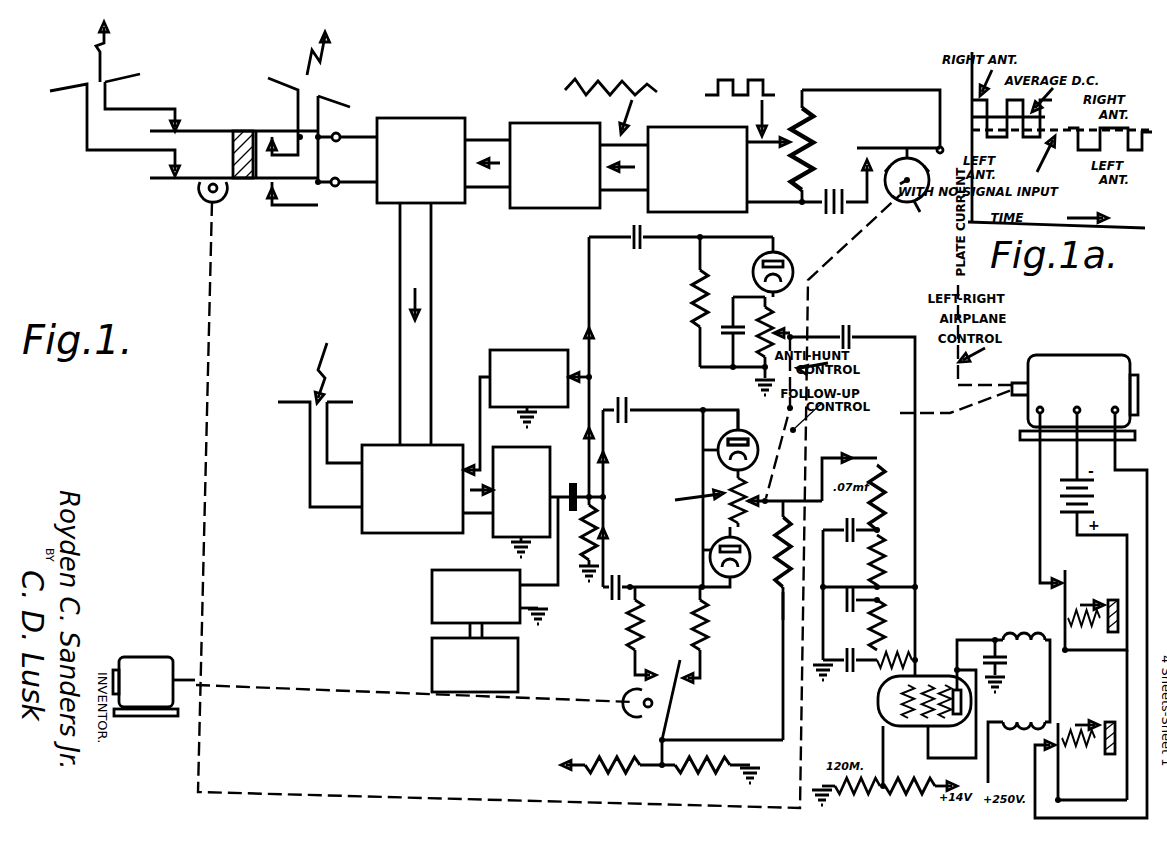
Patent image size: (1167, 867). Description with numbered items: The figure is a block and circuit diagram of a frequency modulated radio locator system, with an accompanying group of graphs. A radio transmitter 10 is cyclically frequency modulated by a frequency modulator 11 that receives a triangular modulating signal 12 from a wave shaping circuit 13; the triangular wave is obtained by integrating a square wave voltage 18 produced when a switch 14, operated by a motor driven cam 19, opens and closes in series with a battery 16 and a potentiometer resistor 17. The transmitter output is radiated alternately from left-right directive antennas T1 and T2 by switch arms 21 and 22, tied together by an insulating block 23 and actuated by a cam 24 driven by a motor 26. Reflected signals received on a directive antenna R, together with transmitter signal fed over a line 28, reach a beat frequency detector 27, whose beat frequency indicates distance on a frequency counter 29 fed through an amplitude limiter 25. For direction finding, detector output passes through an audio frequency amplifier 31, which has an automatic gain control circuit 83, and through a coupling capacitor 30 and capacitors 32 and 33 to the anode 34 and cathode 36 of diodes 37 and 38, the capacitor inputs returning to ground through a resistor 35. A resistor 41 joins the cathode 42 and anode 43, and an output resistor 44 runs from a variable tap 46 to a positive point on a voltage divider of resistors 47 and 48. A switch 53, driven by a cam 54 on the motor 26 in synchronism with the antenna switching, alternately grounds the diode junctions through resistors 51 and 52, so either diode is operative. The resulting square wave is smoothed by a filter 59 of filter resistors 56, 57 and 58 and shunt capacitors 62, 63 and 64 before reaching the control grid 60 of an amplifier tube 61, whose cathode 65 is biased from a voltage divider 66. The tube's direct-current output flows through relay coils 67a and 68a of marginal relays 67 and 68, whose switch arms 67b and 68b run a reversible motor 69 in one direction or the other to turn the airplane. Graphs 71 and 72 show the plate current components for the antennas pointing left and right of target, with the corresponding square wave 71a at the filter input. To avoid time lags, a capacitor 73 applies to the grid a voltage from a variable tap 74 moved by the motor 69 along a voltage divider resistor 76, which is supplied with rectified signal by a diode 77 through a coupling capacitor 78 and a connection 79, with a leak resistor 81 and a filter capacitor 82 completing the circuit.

In FIG. 1, the radio transmitter 10 is at (432, 118).
In FIG. 1, the frequency modulator 11 is at (530, 123).
In FIG. 1, the modulating signal 12 is at (580, 86).
In FIG. 1, the wave shaping circuit 13 is at (708, 127).
In FIG. 1, the switch 14 is at (899, 152).
In FIG. 1, the battery 16 is at (838, 188).
In FIG. 1, the potentiometer resistor 17 is at (815, 132).
In FIG. 1, the square wave voltage 18 is at (757, 64).
In FIG. 1, the motor driven cam 19 is at (918, 219).
In FIG. 1, the switch arm 21 is at (220, 130).
In FIG. 1, the switch arm 22 is at (216, 177).
In FIG. 1, the block of insulating material 23 is at (256, 162).
In FIG. 1, the cam 24 is at (224, 196).
In FIG. 1, the amplitude limiter 25 is at (432, 604).
In FIG. 1, the motor 26 is at (153, 657).
In FIG. 1, the beat frequency detector 27 is at (392, 445).
In FIG. 1, the line 28 is at (400, 257).
In FIG. 1, the frequency counter 29 is at (432, 663).
In FIG. 1, the coupling capacitor 30 is at (573, 483).
In FIG. 1, the audio frequency amplifier 31 is at (548, 441).
In FIG. 1, the capacitor 32 is at (618, 400).
In FIG. 1, the capacitor 33 is at (620, 573).
In FIG. 1, the anode 34 is at (753, 440).
In FIG. 1, the resistor 35 is at (600, 528).
In FIG. 1, the cathode 36 is at (780, 600).
In FIG. 1, the diode 37 is at (718, 452).
In FIG. 1, the diode 38 is at (710, 562).
In FIG. 1, the resistor 41 is at (744, 514).
In FIG. 1, the cathode 42 is at (723, 462).
In FIG. 1, the anode 43 is at (708, 550).
In FIG. 1, the output resistor 44 is at (778, 556).
In FIG. 1, the variable tap 46 is at (783, 488).
In FIG. 1, the resistor 47 is at (698, 772).
In FIG. 1, the resistor 48 is at (605, 772).
In FIG. 1, the resistor 51 is at (712, 642).
In FIG. 1, the resistor 52 is at (630, 642).
In FIG. 1, the switch 53 is at (683, 690).
In FIG. 1, the cam 54 is at (634, 712).
In FIG. 1, the filter resistor 56 is at (870, 464).
In FIG. 1, the filter resistor 57 is at (890, 567).
In FIG. 1, the filter resistor 58 is at (895, 613).
In FIG. 1, the filter 59 is at (860, 572).
In FIG. 1, the control grid 60 is at (895, 668).
In FIG. 1, the amplifier tube 61 is at (938, 668).
In FIG. 1, the shunt capacitor 62 is at (846, 527).
In FIG. 1, the shunt capacitor 63 is at (855, 612).
In FIG. 1, the shunt capacitor 64 is at (851, 673).
In FIG. 1, the cathode 65 is at (880, 722).
In FIG. 1, the voltage divider 66 is at (925, 783).
In FIG. 1, the marginal relay 67 is at (1050, 612).
In FIG. 1, the relay coil 67a is at (1000, 632).
In FIG. 1, the switch arm 67b is at (1068, 580).
In FIG. 1, the marginal relay 68 is at (1026, 754).
In FIG. 1, the relay coil 68a is at (1025, 735).
In FIG. 1, the switch arm 68b is at (1062, 762).
In FIG. 1, the reversible motor 69 is at (1115, 358).
In FIG. 1A, the graph 71 is at (1006, 112).
In FIG. 1A, the square wave 71a is at (1103, 130).
In FIG. 1A, the graph 72 is at (1090, 145).
In FIG. 1, the capacitor 73 is at (854, 330).
In FIG. 1, the variable tap 74 is at (779, 328).
In FIG. 1, the voltage divider resistor 76 is at (750, 297).
In FIG. 1, the diode 77 is at (788, 262).
In FIG. 1, the coupling capacitor 78 is at (643, 250).
In FIG. 1, the connection 79 is at (587, 308).
In FIG. 1, the leak resistor 81 is at (690, 302).
In FIG. 1, the filter capacitor 82 is at (730, 346).
In FIG. 1, the automatic gain control circuit 83 is at (540, 350).
In FIG. 1, the directive antenna T1 is at (314, 107).
In FIG. 1, the directive antenna T2 is at (106, 99).
In FIG. 1, the directive receiving antenna R is at (320, 425).